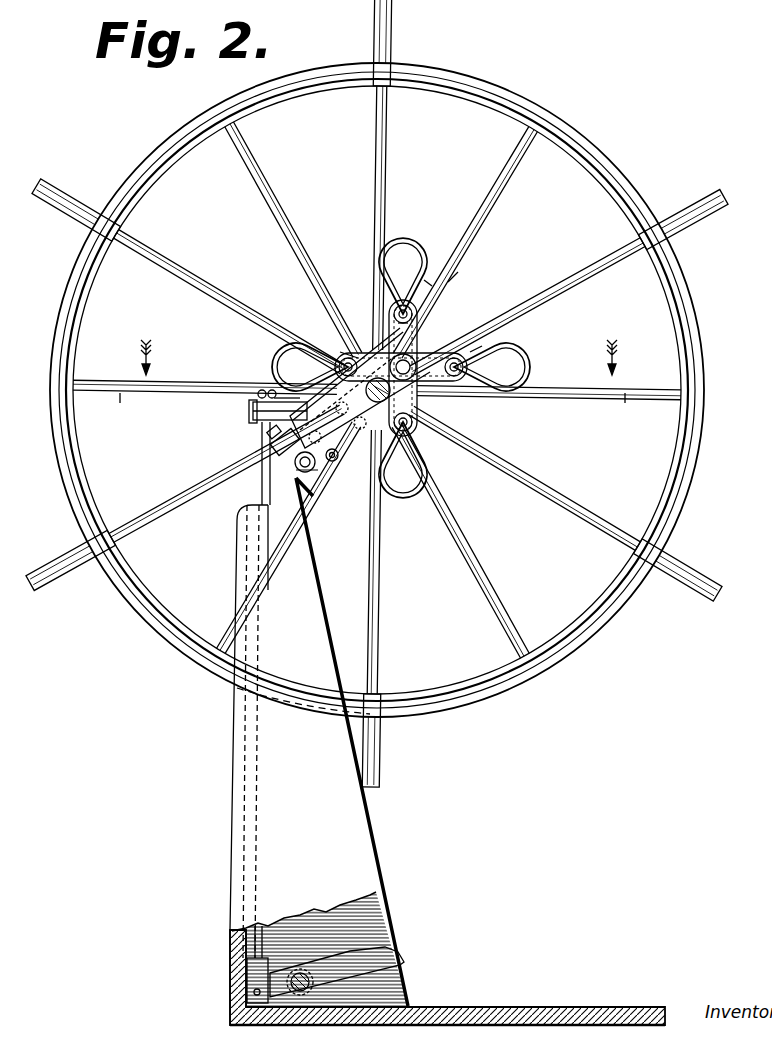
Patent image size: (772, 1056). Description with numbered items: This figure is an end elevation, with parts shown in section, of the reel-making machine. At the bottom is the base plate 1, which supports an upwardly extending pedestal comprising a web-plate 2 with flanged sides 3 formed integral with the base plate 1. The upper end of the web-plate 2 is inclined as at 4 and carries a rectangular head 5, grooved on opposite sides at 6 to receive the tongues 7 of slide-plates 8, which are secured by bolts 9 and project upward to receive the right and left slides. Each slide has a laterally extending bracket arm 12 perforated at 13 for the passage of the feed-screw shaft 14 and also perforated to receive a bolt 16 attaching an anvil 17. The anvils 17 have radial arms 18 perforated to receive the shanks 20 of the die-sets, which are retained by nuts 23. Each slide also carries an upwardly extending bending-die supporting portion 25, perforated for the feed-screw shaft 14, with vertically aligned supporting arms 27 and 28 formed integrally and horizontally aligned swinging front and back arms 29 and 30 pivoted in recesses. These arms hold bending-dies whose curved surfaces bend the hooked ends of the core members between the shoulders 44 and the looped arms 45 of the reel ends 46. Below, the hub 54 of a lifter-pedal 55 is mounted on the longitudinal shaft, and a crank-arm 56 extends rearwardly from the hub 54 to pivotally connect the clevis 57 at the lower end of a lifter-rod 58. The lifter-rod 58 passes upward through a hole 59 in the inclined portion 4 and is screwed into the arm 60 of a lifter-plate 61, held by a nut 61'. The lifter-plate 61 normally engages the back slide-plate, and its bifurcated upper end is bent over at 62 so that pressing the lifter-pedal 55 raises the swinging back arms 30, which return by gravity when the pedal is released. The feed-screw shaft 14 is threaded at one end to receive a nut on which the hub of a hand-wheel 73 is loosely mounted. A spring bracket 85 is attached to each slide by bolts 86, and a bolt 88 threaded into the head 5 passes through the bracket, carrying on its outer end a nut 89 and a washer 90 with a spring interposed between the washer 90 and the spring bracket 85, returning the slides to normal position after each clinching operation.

The base plate 1 is at (566, 1011).
The web-plate 2 is at (229, 947).
The flanged sides 3 is at (360, 880).
The inclined portion 4 is at (300, 480).
The rectangular head 5 is at (306, 490).
The grooves 6 is at (290, 470).
The tongues 7 is at (272, 447).
The slide-plates 8 is at (270, 436).
The bolts 9 is at (336, 470).
The bracket arm 12 is at (414, 349).
The perforation 13 is at (425, 412).
The feed-screw shaft 14 is at (414, 403).
The bolt 16 is at (437, 338).
The anvils 17 is at (420, 322).
The radial arms 18 is at (386, 330).
The shanks 20 is at (441, 462).
The nuts 23 is at (401, 367).
The bending-die supporting portion 25 is at (498, 342).
The supporting arm 27 is at (431, 273).
The supporting arm 28 is at (433, 472).
The swinging front arm 29 is at (488, 396).
The swinging back arm 30 is at (352, 345).
The shoulders 44 is at (462, 276).
The looped arms 45 is at (401, 245).
The reel ends 46 is at (282, 352).
The hub 54 is at (326, 1012).
The lifter-pedal 55 is at (392, 961).
The crank-arm 56 is at (282, 993).
The clevis 57 is at (247, 980).
The lifter-rod 58 is at (262, 851).
The hole 59 is at (250, 515).
The arm 60 is at (253, 418).
The lifter-plate 61 is at (259, 723).
The nut 61' is at (225, 427).
The bent-over edges 62 is at (288, 380).
The hand-wheel 73 is at (503, 89).
The spring bracket 85 is at (352, 430).
The bolts 86 is at (372, 440).
The bolt 88 is at (276, 482).
The nut 89 is at (322, 540).
The washer 90 is at (330, 465).